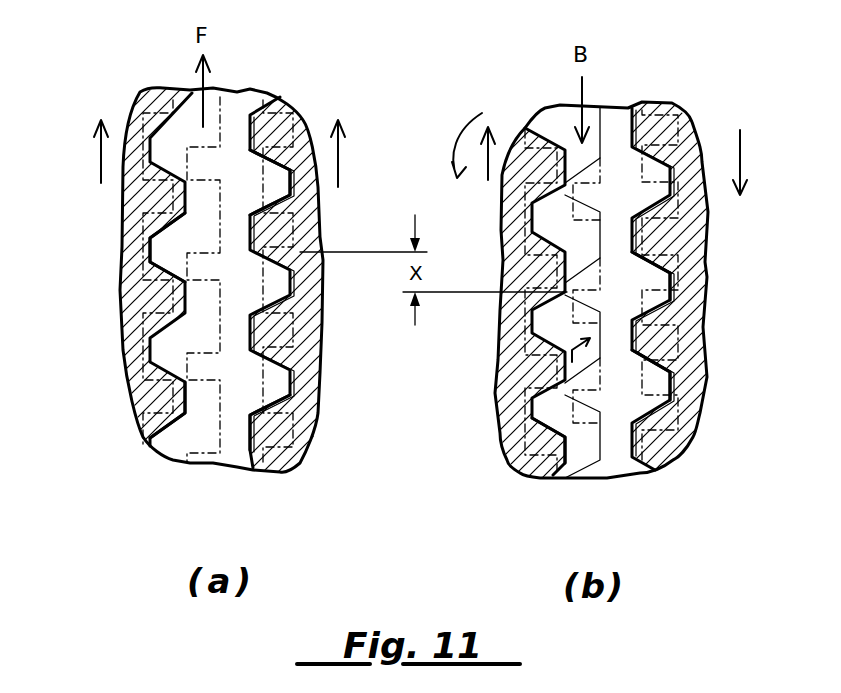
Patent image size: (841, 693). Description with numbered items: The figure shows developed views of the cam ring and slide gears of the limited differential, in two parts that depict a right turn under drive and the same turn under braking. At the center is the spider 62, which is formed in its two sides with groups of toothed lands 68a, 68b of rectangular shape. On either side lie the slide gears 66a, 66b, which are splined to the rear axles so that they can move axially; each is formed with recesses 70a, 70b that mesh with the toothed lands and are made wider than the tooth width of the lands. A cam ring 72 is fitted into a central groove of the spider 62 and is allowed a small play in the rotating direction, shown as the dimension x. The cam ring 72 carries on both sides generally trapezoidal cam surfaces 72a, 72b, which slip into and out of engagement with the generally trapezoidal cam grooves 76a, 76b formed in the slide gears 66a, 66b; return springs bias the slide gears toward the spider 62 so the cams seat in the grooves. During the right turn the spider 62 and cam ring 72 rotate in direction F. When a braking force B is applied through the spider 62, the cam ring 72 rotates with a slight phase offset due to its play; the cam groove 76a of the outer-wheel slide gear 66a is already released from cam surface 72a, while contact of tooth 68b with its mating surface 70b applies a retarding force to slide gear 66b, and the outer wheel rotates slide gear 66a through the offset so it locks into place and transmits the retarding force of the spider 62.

The spider 62 is at (240, 178).
The slide gear 66a is at (194, 94).
The slide gear 66b is at (238, 458).
The toothed land 68a is at (160, 352).
The toothed land 68b is at (320, 317).
The recess 70a is at (140, 373).
The recess 70b is at (297, 470).
The cam ring 72 is at (230, 438).
The cam surface 72a is at (190, 440).
The cam surface 72b is at (283, 408).
The cam groove 76a is at (152, 244).
The cam groove 76b is at (268, 206).